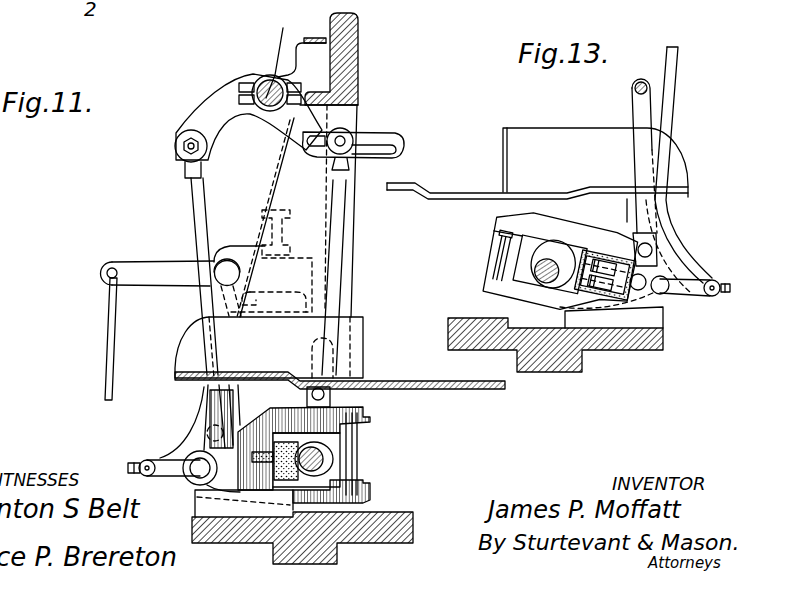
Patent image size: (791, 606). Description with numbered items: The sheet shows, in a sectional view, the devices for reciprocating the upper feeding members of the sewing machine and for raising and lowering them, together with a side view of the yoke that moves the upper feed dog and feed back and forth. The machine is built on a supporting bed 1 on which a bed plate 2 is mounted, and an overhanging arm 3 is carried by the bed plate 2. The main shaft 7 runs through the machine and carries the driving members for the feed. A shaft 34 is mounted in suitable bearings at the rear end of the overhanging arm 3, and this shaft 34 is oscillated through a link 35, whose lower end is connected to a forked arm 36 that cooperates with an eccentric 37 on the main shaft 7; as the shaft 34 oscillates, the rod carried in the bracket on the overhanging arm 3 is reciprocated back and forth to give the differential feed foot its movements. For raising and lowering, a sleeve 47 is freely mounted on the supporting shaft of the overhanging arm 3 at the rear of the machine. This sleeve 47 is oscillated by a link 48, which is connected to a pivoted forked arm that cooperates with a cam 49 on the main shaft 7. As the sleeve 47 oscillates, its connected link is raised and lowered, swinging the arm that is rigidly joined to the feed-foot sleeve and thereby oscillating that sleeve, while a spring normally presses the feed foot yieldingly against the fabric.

In FIG. 11, the supporting bed 1 is at (405, 517).
In FIG. 13, the supporting bed 1 is at (628, 340).
In FIG. 11, the bed plate 2 is at (458, 389).
In FIG. 11, the overhanging arm 3 is at (348, 60).
In FIG. 11, the main shaft 7 is at (328, 453).
In FIG. 13, the main shaft 7 is at (544, 271).
In FIG. 11, the shaft 34 is at (256, 80).
In FIG. 11, the link 35 is at (195, 221).
In FIG. 13, the link 35 is at (670, 97).
In FIG. 11, the forked arm 36 is at (362, 413).
In FIG. 13, the forked arm 36 is at (567, 232).
In FIG. 13, the eccentric 37 is at (541, 250).
In FIG. 11, the sleeve 47 is at (282, 40).
In FIG. 11, the link 48 is at (336, 232).
In FIG. 13, the link 48 is at (644, 172).
In FIG. 11, the cam 49 is at (332, 469).